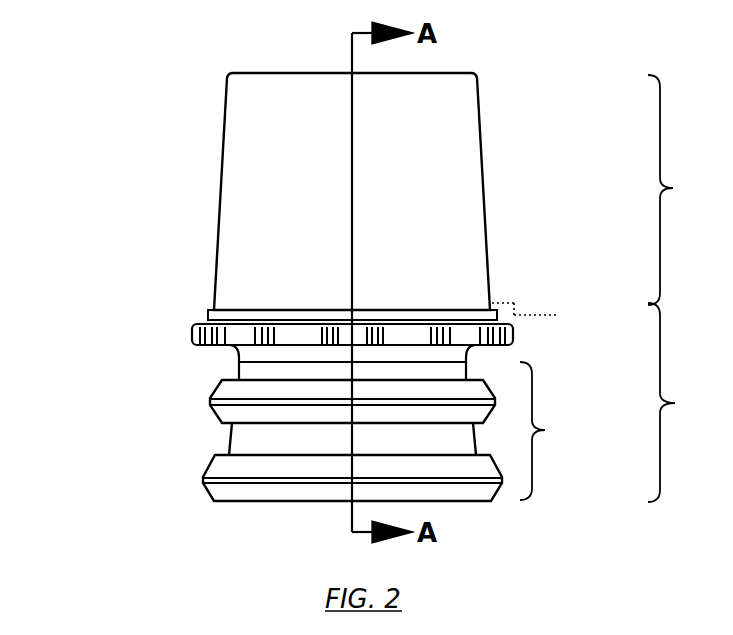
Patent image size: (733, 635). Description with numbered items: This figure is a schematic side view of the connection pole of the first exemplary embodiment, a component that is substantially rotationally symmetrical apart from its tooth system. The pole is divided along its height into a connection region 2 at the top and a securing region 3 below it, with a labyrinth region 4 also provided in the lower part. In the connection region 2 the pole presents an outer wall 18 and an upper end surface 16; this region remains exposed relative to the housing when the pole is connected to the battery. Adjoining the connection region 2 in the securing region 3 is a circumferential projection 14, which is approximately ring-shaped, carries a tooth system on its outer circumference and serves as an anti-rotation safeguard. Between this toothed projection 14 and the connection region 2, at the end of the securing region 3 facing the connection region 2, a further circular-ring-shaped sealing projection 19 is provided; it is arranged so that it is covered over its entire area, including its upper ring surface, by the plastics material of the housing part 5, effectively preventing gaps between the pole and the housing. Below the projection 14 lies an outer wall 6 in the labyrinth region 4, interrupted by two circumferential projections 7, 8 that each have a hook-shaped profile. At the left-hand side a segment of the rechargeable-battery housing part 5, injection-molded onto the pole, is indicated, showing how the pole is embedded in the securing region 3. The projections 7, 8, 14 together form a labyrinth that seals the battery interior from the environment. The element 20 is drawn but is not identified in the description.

The connection region 2 is at (673, 190).
The securing region 3 is at (673, 402).
The labyrinth region 4 is at (544, 431).
The rechargeable-battery housing part 5 is at (517, 303).
The outer wall 6 is at (250, 447).
The circumferential projection 7 is at (222, 402).
The circumferential projection 8 is at (215, 478).
The circumferential projection 14 is at (197, 326).
The upper end surface 16 is at (282, 161).
The outer wall 18 is at (263, 243).
The sealing projection 19 is at (292, 313).
The ring upper edge 20 is at (268, 303).